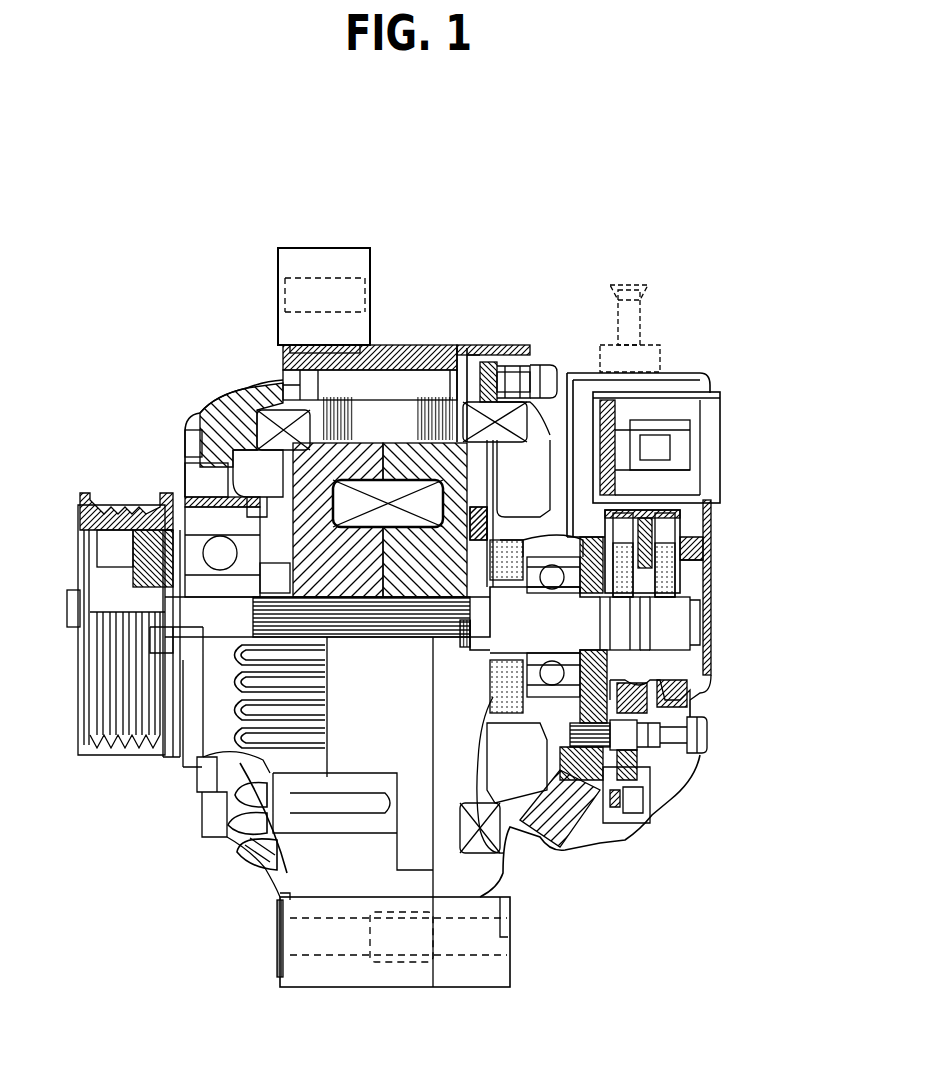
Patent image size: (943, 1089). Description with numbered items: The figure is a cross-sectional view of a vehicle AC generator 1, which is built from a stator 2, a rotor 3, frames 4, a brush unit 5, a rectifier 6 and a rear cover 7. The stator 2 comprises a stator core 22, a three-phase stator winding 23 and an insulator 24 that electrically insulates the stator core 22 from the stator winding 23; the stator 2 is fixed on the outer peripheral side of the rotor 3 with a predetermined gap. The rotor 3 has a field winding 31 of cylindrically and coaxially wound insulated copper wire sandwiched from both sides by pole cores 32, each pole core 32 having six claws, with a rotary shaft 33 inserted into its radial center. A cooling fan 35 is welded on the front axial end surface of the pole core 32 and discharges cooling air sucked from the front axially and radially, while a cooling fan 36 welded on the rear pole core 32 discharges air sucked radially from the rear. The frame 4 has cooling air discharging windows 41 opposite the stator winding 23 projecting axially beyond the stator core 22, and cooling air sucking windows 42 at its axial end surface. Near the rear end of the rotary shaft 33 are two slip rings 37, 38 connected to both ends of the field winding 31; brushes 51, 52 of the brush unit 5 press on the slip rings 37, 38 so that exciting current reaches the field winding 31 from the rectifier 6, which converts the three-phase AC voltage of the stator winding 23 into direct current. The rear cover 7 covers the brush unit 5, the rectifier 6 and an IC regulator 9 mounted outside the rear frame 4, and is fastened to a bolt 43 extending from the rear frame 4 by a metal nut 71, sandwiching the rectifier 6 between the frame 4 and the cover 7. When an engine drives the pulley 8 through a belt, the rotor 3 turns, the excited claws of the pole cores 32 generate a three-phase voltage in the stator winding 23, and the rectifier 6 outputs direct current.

The AC generator 1 is at (548, 232).
The stator 2 is at (399, 508).
The stator core 22 is at (430, 395).
The insulator 24 is at (470, 390).
The rotor 3 is at (328, 380).
The field winding 31 is at (372, 488).
The pole core 32 is at (318, 470).
The three-phase stator winding 23 is at (265, 428).
The rotary shaft 33 is at (142, 510).
The cooling fan 35 is at (230, 413).
The cooling fan 36 is at (535, 430).
The slip ring 37 is at (627, 617).
The slip ring 38 is at (680, 637).
The frame 4 is at (283, 877).
The cooling air discharging window 41 is at (257, 745).
The cooling air sucking window 42 is at (570, 500).
The bolt 43 is at (603, 833).
The brush unit 5 is at (683, 581).
The brush 51 is at (627, 578).
The brush 52 is at (667, 587).
The rectifier 6 is at (665, 800).
The rear cover 7 is at (650, 840).
The metal nut 71 is at (700, 755).
The pulley 8 is at (83, 493).
The IC regulator 9 is at (710, 410).